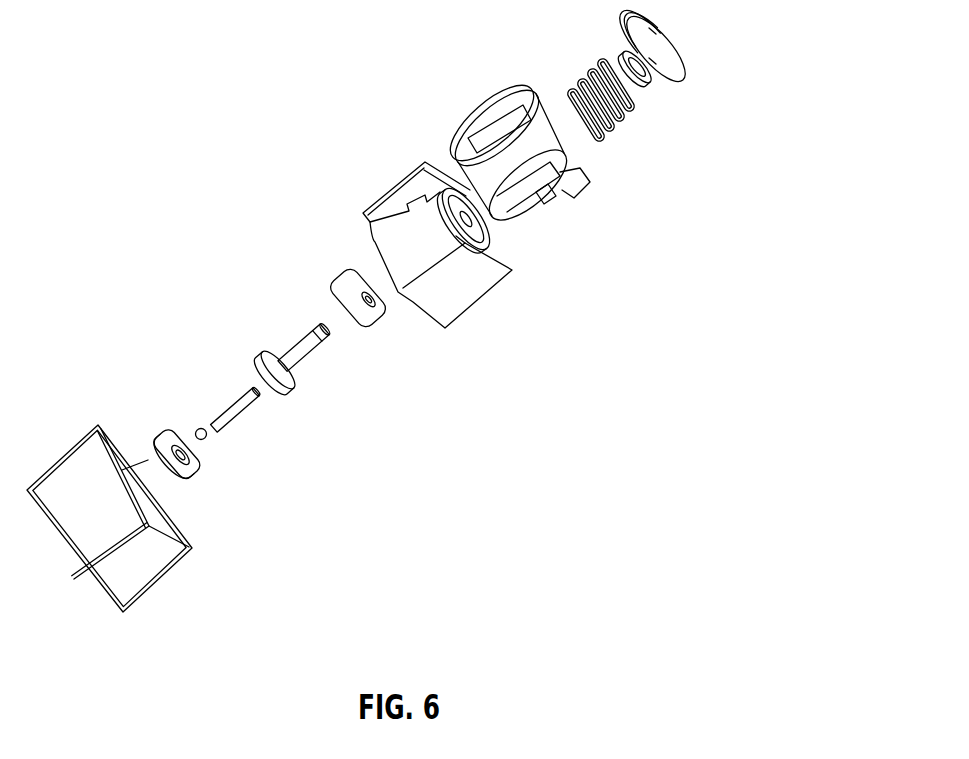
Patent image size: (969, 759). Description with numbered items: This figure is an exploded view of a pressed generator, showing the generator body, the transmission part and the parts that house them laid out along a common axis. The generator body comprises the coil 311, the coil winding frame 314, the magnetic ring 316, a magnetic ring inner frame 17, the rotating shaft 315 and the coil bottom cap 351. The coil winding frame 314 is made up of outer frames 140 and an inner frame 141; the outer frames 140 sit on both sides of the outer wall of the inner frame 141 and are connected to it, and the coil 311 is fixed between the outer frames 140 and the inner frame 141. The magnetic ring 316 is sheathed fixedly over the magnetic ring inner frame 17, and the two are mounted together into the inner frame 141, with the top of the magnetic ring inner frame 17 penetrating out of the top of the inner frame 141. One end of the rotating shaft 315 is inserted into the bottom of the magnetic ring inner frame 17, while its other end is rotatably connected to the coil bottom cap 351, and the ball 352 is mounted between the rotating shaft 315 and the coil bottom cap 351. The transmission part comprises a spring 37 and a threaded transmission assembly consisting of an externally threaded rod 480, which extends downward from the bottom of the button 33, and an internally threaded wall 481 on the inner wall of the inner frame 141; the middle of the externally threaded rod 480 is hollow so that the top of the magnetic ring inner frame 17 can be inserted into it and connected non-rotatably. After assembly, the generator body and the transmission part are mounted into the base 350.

The button 33 is at (668, 60).
The externally threaded rod 480 is at (667, 83).
The spring 37 is at (623, 123).
The coil 311 is at (571, 200).
The internally threaded wall 481 is at (497, 236).
The outer frames 140 is at (468, 275).
The inner frame 141 is at (417, 258).
The coil winding frame 314 is at (530, 282).
The magnetic ring 316 is at (359, 313).
The magnetic ring inner frame 17 is at (298, 364).
The rotating shaft 315 is at (239, 414).
The ball 352 is at (205, 439).
The coil bottom cap 351 is at (191, 478).
The base 350 is at (156, 551).